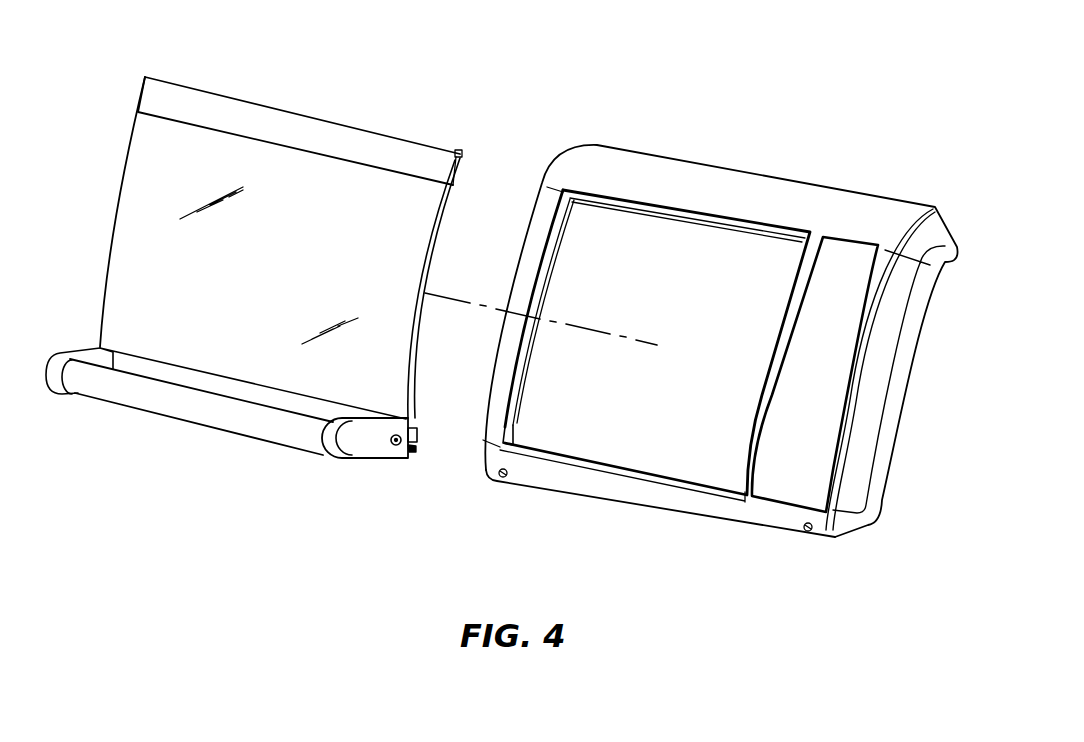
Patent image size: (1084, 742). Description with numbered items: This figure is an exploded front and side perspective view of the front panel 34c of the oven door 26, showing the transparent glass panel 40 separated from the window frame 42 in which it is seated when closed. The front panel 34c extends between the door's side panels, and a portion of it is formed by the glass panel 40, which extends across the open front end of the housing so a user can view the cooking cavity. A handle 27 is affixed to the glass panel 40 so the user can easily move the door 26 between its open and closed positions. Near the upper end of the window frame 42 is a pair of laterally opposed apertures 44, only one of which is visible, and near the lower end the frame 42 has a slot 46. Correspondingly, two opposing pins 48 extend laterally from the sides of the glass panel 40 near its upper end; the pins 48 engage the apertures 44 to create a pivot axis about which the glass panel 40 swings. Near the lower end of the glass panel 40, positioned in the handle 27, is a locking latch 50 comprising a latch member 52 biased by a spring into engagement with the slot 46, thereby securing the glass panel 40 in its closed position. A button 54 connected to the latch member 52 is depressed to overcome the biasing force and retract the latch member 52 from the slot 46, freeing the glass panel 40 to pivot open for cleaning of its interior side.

The door 26 is at (746, 76).
The handle 27 is at (180, 405).
The front panel 34c is at (817, 200).
The glass panel 40 is at (137, 203).
The window frame 42 is at (537, 272).
The apertures 44 is at (567, 203).
The slot 46 is at (513, 430).
The pins 48 is at (143, 80).
The locking latch 50 is at (412, 450).
The latch member 52 is at (420, 437).
The button 54 is at (397, 446).